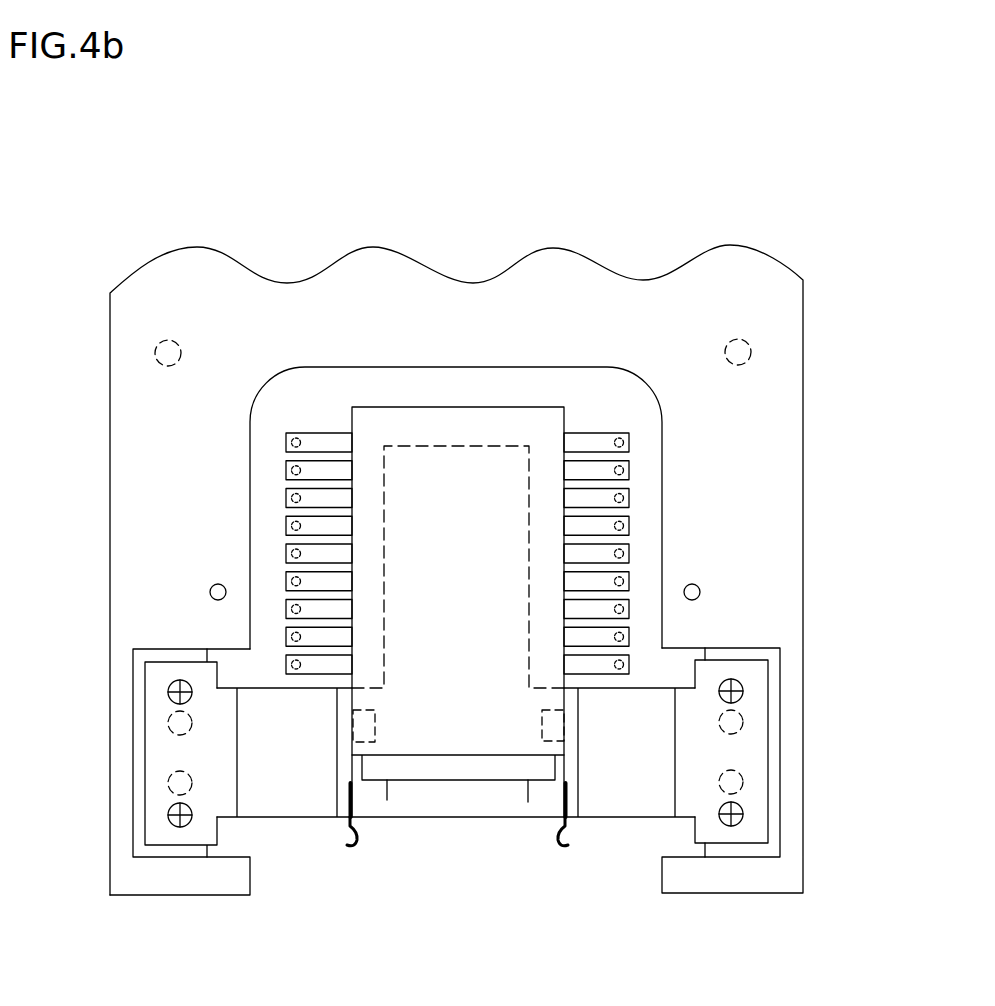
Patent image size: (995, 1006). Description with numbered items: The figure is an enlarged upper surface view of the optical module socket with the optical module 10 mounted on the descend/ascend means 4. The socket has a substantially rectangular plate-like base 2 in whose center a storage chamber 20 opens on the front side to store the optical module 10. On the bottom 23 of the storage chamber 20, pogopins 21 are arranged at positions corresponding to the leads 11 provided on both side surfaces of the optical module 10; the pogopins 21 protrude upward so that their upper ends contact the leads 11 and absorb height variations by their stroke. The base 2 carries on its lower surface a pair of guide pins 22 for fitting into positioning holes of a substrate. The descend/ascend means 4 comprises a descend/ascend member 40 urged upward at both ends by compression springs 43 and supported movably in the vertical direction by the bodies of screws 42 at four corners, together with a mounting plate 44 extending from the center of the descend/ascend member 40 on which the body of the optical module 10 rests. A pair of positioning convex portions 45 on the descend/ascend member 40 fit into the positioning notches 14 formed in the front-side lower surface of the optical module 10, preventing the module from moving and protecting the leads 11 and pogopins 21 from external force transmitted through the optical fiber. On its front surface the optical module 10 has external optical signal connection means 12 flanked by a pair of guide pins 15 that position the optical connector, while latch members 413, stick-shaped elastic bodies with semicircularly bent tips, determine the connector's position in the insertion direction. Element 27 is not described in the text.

The base 2 is at (804, 495).
The descend/ascend means 4 is at (783, 723).
The optical module 10 is at (547, 403).
The leads 11 is at (597, 432).
The external optical signal connection means 12 is at (480, 770).
The positioning notches 14 is at (362, 725).
The guide pins 15 is at (528, 800).
The storage chamber 20 is at (432, 400).
The pogopins 21 is at (628, 437).
The guide pins 22 is at (752, 348).
The bottom 23 is at (337, 382).
The positioning hole 27 is at (702, 592).
The descend/ascend member 40 is at (783, 751).
The screws 42 is at (742, 805).
The compression springs 43 is at (742, 773).
The mounting plate 44 is at (480, 467).
The positioning convex portions 45 is at (422, 878).
The latch members 413 is at (349, 830).